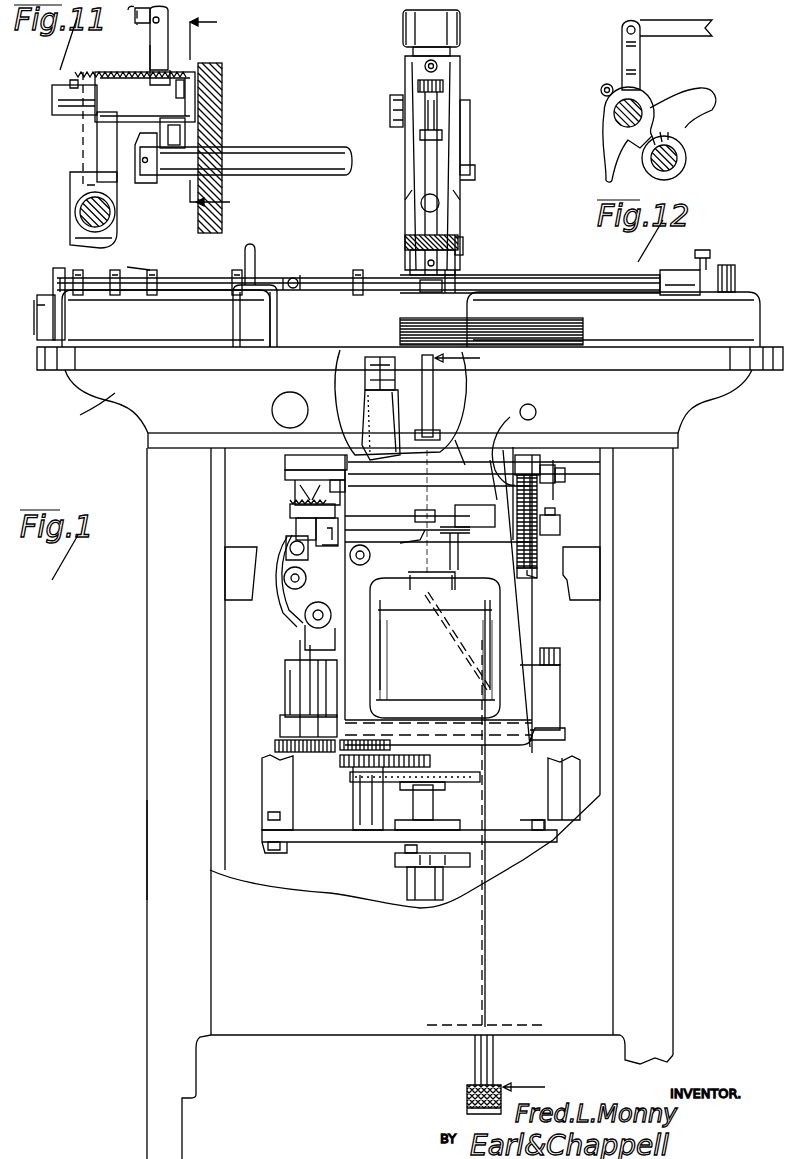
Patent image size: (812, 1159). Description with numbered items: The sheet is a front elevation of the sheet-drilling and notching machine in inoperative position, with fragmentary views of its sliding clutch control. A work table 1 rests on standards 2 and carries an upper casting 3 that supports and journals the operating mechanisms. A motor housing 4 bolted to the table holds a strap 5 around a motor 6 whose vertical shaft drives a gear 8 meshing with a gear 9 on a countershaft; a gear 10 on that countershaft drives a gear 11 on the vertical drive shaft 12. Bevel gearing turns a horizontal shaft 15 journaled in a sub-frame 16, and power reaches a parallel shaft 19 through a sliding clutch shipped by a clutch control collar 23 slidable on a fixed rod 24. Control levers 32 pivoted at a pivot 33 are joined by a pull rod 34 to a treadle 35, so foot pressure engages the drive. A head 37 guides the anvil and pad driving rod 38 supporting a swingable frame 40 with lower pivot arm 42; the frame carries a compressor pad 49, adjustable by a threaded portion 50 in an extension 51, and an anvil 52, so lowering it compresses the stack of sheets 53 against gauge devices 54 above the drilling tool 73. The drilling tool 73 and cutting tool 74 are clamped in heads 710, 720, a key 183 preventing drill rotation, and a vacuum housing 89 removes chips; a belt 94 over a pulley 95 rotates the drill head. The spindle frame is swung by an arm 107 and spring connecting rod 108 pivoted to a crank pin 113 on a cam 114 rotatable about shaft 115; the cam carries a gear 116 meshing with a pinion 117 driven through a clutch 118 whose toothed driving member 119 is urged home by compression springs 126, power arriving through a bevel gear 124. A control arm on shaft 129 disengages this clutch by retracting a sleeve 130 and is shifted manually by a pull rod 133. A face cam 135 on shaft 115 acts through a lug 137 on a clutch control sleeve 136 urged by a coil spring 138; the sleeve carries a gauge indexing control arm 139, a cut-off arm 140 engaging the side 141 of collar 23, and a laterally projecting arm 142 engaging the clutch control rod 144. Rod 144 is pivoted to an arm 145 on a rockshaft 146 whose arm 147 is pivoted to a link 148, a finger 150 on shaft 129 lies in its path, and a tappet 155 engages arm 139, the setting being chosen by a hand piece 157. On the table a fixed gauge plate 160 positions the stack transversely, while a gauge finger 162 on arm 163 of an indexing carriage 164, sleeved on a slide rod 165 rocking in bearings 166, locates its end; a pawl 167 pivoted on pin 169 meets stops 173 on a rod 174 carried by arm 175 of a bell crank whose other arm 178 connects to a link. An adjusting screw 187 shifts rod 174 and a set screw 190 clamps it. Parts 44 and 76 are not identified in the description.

In FIG. 1, the work table 1 is at (157, 353).
In FIG. 1, the legs or standards 2 is at (158, 850).
In FIG. 11, the upper casting 3 is at (222, 97).
In FIG. 1, the upper casting 3 is at (115, 393).
In FIG. 1, the motor housing or hanger 4 is at (277, 783).
In FIG. 1, the strap 5 is at (480, 632).
In FIG. 1, the motor 6 is at (477, 600).
In FIG. 1, the gear 8 is at (438, 762).
In FIG. 1, the gear 9 is at (353, 782).
In FIG. 1, the gear 10 is at (377, 743).
In FIG. 1, the gear 11 is at (275, 742).
In FIG. 11, the drive shaft 12 is at (221, 112).
In FIG. 1, the drive shaft 12 is at (313, 667).
In FIG. 1, the horizontally disposed shaft 15 is at (305, 623).
In FIG. 1, the sub-frame 16 is at (297, 597).
In FIG. 1, the shaft 19 is at (284, 580).
In FIG. 11, the clutch control collar 23 is at (70, 222).
In FIG. 1, the clutch control collar 23 is at (287, 540).
In FIG. 11, the fixed rod 24 is at (82, 207).
In FIG. 1, the fixed rod 24 is at (290, 547).
In FIG. 1, the control levers 32 is at (400, 543).
In FIG. 1, the pivot 33 is at (360, 567).
In FIG. 1, the pull rod 34 is at (488, 795).
In FIG. 1, the treadle 35 is at (467, 1095).
In FIG. 1, the head or cap 37 is at (452, 33).
In FIG. 1, the anvil and pad driving rod 38 is at (450, 53).
In FIG. 1, the pad-carrying frame 40 is at (407, 160).
In FIG. 1, the lower pivot arm 42 is at (463, 243).
In FIG. 1, the knob 44 is at (467, 137).
In FIG. 1, the compressor pad 49 is at (427, 285).
In FIG. 1, the threaded portion 50 is at (410, 238).
In FIG. 1, the extension 51 is at (421, 203).
In FIG. 1, the anvil 52 is at (412, 262).
In FIG. 1, the stack of sheets 53 is at (583, 330).
In FIG. 1, the gauge devices 54 is at (455, 283).
In FIG. 1, the drilling tool 73 is at (433, 377).
In FIG. 1, the cutting tool 74 is at (383, 375).
In FIG. 1, the boss 76 is at (420, 540).
In FIG. 1, the housing 89 is at (380, 407).
In FIG. 1, the belt 94 is at (480, 775).
In FIG. 1, the pulley 95 is at (436, 806).
In FIG. 1, the arm 107 is at (468, 514).
In FIG. 1, the spring connecting rod 108 is at (560, 528).
In FIG. 1, the crank pin 113 is at (555, 522).
In FIG. 1, the cam 114 is at (537, 566).
In FIG. 11, the shaft 115 is at (283, 152).
In FIG. 12, the shaft 115 is at (690, 158).
In FIG. 1, the shaft 115 is at (450, 535).
In FIG. 1, the gear 116 is at (518, 572).
In FIG. 1, the pinion 117 is at (537, 487).
In FIG. 1, the clutch 118 is at (490, 460).
In FIG. 1, the toothed driving member 119 is at (461, 443).
In FIG. 1, the bevel gear 124 is at (337, 487).
In FIG. 1, the compression springs 126 is at (553, 460).
In FIG. 1, the shaft 129 is at (510, 417).
In FIG. 1, the sleeve 130 is at (565, 473).
In FIG. 1, the pull rod 133 is at (537, 410).
In FIG. 11, the face cam 135 is at (147, 178).
In FIG. 12, the face cam 135 is at (678, 145).
In FIG. 1, the face cam 135 is at (350, 565).
In FIG. 11, the clutch control sleeve 136 is at (112, 88).
In FIG. 1, the clutch control sleeve 136 is at (290, 503).
In FIG. 11, the lug 137 is at (188, 128).
In FIG. 12, the lug 137 is at (660, 132).
In FIG. 11, the coil spring 138 is at (170, 68).
In FIG. 12, the coil spring 138 is at (600, 90).
In FIG. 1, the coil spring 138 is at (297, 493).
In FIG. 11, the gauge indexing control arm 139 is at (172, 30).
In FIG. 12, the gauge indexing control arm 139 is at (623, 53).
In FIG. 1, the gauge indexing control arm 139 is at (303, 470).
In FIG. 11, the drive clutch cut-off arm 140 is at (97, 152).
In FIG. 12, the drive clutch cut-off arm 140 is at (611, 152).
In FIG. 1, the drive clutch cut-off arm 140 is at (296, 520).
In FIG. 11, the side of clutch collar 141 is at (112, 198).
In FIG. 1, the side of clutch collar 141 is at (318, 590).
In FIG. 12, the laterally projecting arm 142 is at (690, 97).
In FIG. 1, the clutch control rod 144 is at (292, 643).
In FIG. 1, the arm 145 is at (288, 717).
In FIG. 1, the rockshaft 146 is at (567, 728).
In FIG. 1, the arm 147 is at (560, 690).
In FIG. 1, the link 148 is at (567, 643).
In FIG. 1, the finger 150 is at (293, 452).
In FIG. 11, the tappet 155 is at (145, 97).
In FIG. 1, the tappet 155 is at (297, 477).
In FIG. 1, the hand piece 157 is at (272, 410).
In FIG. 1, the fixed gauge plate 160 is at (653, 337).
In FIG. 1, the gauge finger 162 is at (272, 318).
In FIG. 1, the arm 163 is at (252, 287).
In FIG. 1, the indexing carriage 164 is at (296, 278).
In FIG. 1, the slide rod 165 is at (40, 305).
In FIG. 1, the bearings 166 is at (45, 296).
In FIG. 1, the pawl 167 is at (275, 275).
In FIG. 1, the pivot pin 169 is at (288, 268).
In FIG. 1, the stops 173 is at (127, 267).
In FIG. 1, the rod 174 is at (545, 268).
In FIG. 1, the arm 175 is at (675, 278).
In FIG. 1, the arm 178 is at (53, 275).
In FIG. 11, the radial pin or key 183 is at (140, 27).
In FIG. 12, the radial pin or key 183 is at (695, 32).
In FIG. 1, the adjusting screw 187 is at (735, 280).
In FIG. 1, the set screw 190 is at (704, 262).
In FIG. 1, the head 710 is at (433, 427).
In FIG. 1, the head 720 is at (377, 378).